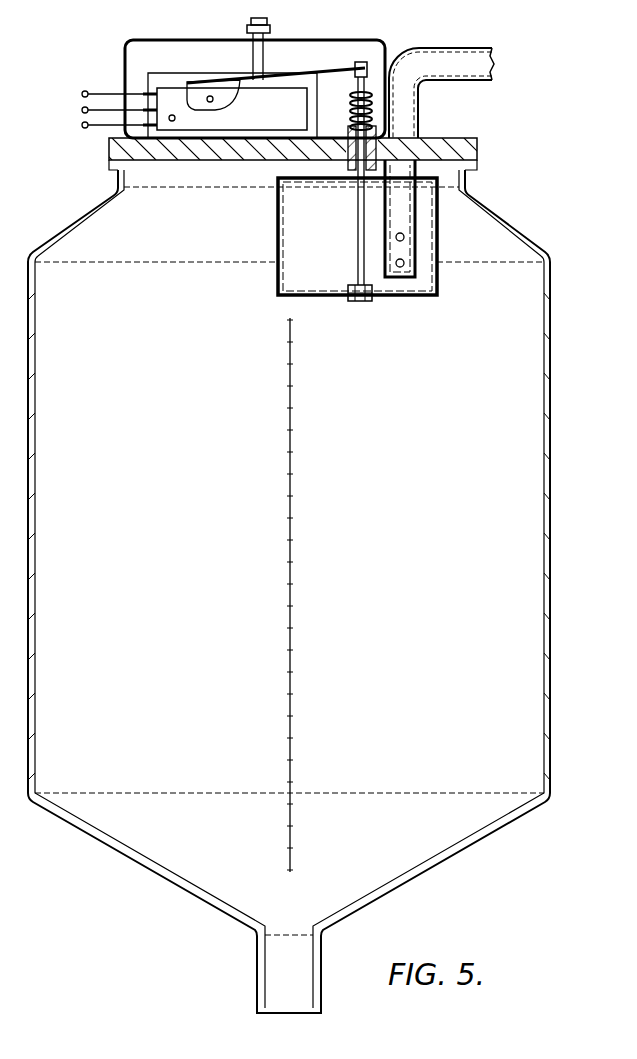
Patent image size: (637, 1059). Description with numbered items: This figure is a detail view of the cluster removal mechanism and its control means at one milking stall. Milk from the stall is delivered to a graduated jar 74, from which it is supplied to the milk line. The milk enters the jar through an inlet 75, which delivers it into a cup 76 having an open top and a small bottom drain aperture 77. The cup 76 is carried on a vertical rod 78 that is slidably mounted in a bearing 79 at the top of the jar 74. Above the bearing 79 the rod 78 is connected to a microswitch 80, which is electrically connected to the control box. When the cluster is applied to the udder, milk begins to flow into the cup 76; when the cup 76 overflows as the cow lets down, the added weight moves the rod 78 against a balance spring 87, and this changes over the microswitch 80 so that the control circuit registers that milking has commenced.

The graduated jar 74 is at (550, 642).
The inlet 75 is at (459, 48).
The cup 76 is at (293, 248).
The bottom drain aperture 77 is at (312, 297).
The vertical rod 78 is at (357, 223).
The bearing 79 is at (345, 162).
The microswitch 80 is at (282, 100).
The balance spring 87 is at (392, 100).